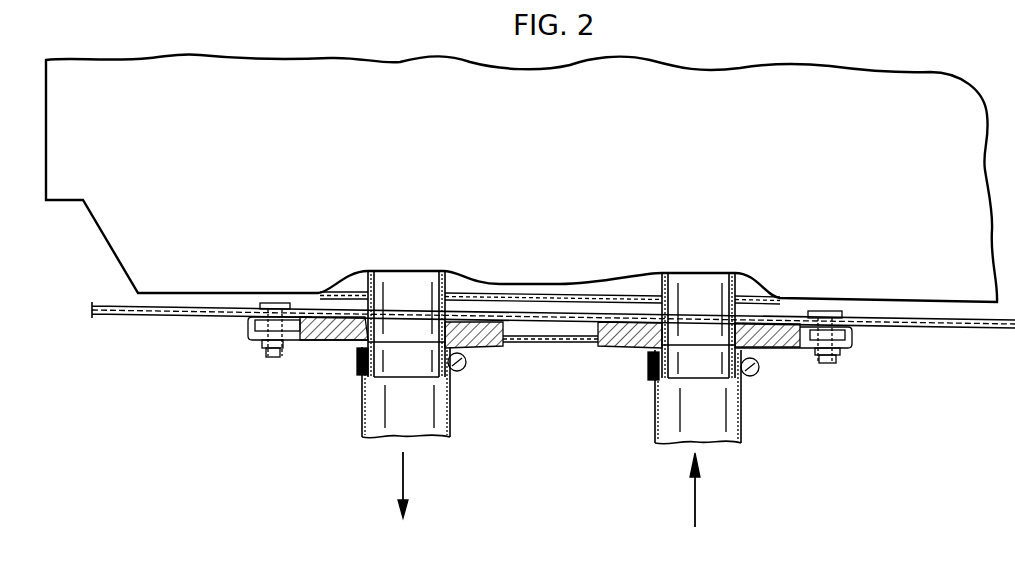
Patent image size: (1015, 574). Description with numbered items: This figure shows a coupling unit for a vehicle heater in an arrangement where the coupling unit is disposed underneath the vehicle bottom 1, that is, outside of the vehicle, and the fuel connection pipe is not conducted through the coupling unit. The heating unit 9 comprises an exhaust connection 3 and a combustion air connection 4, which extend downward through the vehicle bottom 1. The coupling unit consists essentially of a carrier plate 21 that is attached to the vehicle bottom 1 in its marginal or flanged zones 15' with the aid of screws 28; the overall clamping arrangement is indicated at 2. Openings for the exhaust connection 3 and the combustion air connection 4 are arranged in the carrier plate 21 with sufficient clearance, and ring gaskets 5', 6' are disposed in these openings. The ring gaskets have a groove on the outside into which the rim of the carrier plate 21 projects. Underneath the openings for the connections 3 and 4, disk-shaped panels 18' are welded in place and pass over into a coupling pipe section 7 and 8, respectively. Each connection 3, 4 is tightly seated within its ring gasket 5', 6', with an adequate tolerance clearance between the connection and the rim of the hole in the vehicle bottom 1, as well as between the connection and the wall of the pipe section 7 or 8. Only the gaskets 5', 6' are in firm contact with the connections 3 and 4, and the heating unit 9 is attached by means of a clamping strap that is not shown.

The vehicle bottom 1 is at (958, 328).
The clamping device 2 is at (791, 366).
The exhaust connection 3 is at (437, 292).
The combustion air connection 4 is at (722, 292).
The ring gasket 5' is at (334, 353).
The ring gasket 6' is at (630, 358).
The coupling pipe section 7 is at (376, 378).
The coupling pipe section 8 is at (664, 384).
The heating unit 9 is at (547, 164).
The marginal or flanged zones 15' is at (287, 353).
The disk-shaped panels 18' is at (478, 355).
The carrier plate 21 is at (554, 343).
The screws 28 is at (268, 348).